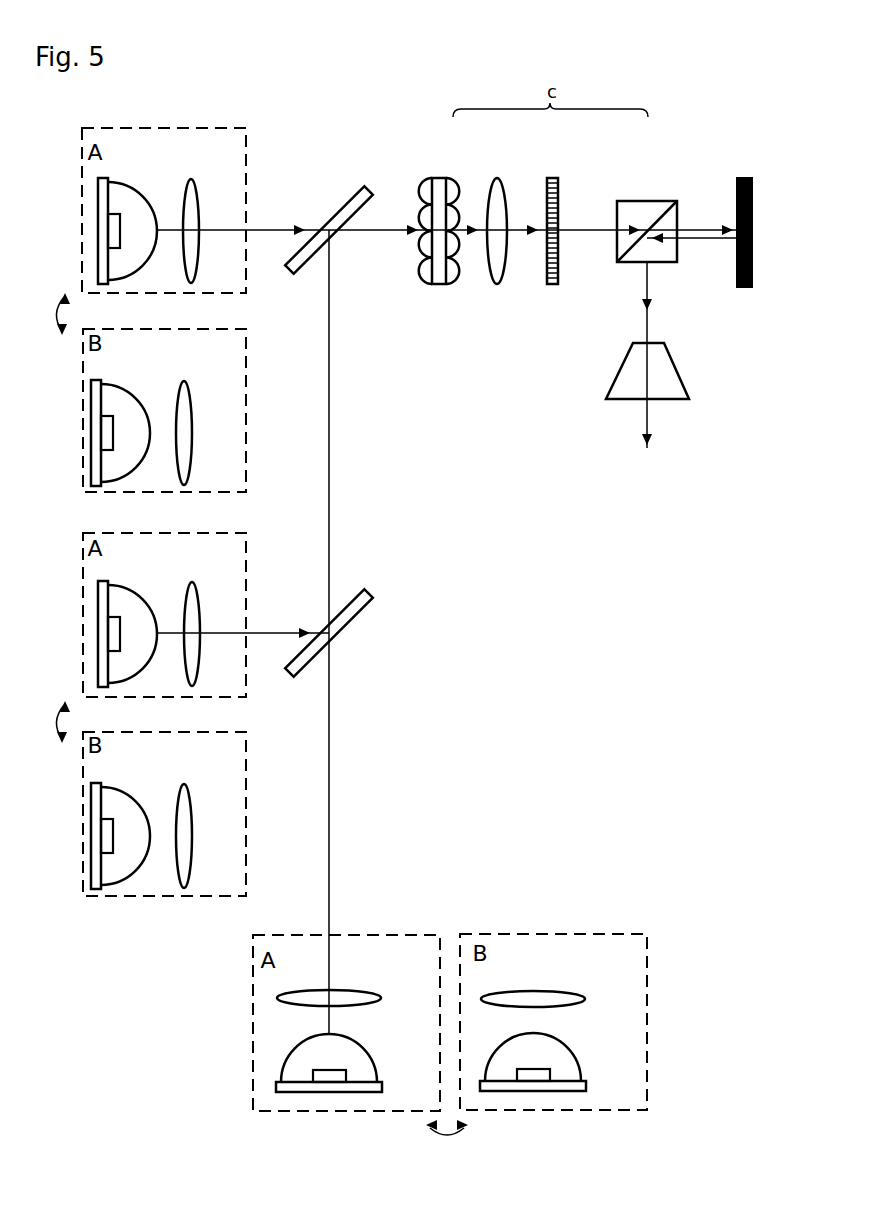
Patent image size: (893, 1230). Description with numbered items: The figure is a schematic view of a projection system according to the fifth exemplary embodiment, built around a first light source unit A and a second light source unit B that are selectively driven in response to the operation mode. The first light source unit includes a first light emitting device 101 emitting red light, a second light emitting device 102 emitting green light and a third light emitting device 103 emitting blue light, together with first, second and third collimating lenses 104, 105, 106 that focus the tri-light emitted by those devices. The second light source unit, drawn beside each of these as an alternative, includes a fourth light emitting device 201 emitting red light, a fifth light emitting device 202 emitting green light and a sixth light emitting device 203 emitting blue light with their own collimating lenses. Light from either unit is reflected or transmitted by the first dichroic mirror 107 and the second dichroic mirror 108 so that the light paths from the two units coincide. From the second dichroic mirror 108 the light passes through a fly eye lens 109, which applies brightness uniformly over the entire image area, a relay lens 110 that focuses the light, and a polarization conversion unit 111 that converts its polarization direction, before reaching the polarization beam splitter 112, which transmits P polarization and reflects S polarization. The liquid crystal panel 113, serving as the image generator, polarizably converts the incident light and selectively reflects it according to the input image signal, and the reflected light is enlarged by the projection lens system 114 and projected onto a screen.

The first light emitting device 101 is at (137, 185).
The second light emitting device 102 is at (136, 590).
The third light emitting device 103 is at (367, 1046).
The fourth light emitting device 201 is at (129, 388).
The fifth light emitting device 202 is at (129, 790).
The sixth light emitting device 203 is at (574, 1045).
The first collimating lens 104 is at (193, 190).
The second collimating lens 105 is at (194, 595).
The third collimating lens 106 is at (356, 992).
The first dichroic mirror 107 is at (351, 615).
The second dichroic mirror 108 is at (336, 206).
The fly eye lens 109 is at (437, 178).
The relay lens 110 is at (497, 178).
The polarization conversion unit 111 is at (552, 178).
The polarization beam splitter 112 is at (640, 200).
The liquid crystal panel 113 is at (745, 178).
The projection lens system 114 is at (668, 353).